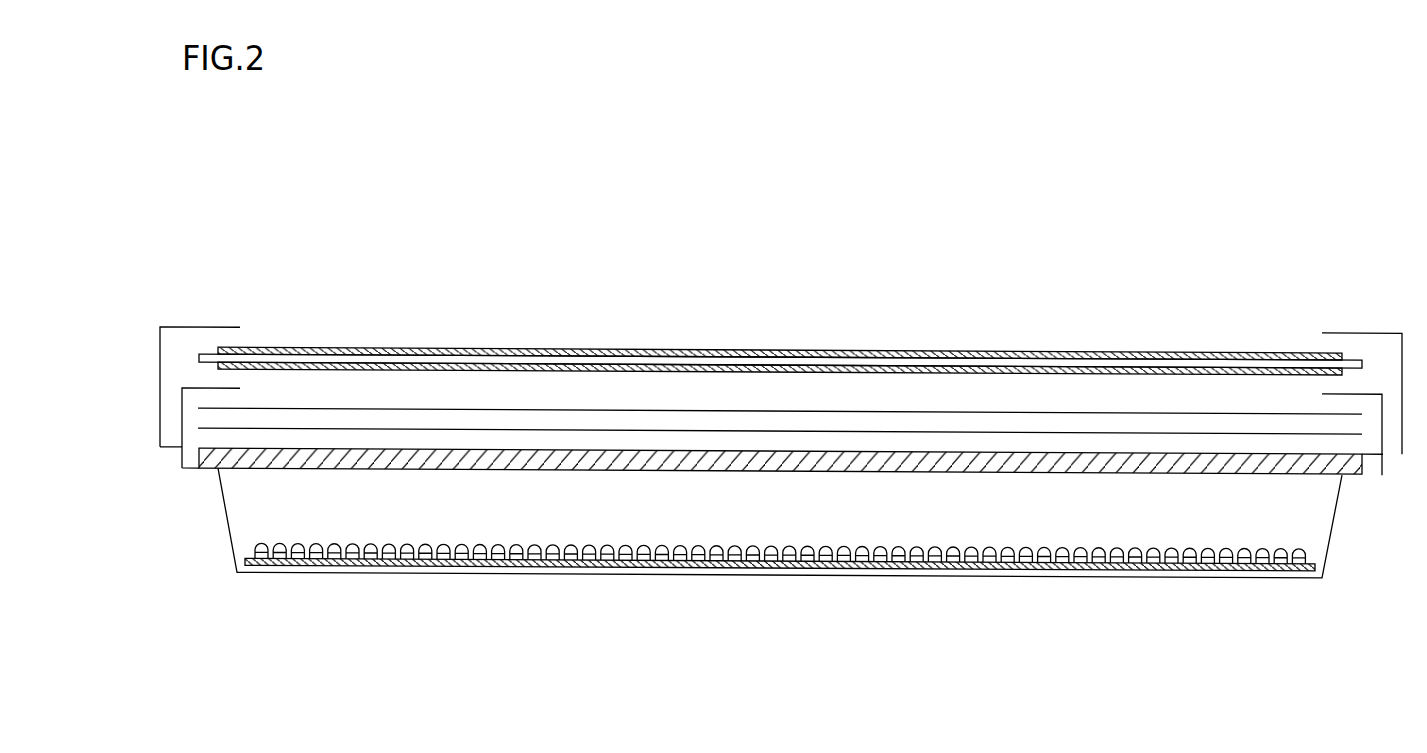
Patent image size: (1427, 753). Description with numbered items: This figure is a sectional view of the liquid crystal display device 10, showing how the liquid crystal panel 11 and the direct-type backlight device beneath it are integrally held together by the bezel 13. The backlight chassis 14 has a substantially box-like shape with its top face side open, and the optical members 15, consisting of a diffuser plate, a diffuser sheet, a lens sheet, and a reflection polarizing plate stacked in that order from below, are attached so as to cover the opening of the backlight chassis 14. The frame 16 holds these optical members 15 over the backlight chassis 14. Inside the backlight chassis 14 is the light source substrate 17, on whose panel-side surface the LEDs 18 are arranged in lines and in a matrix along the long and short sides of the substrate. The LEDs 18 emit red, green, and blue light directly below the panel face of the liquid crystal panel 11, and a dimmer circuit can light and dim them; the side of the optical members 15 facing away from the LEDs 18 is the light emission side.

The liquid crystal display device 10 is at (623, 266).
The liquid crystal panel 11 is at (492, 347).
The bezel 13 is at (208, 327).
The backlight chassis 14 is at (224, 510).
The optical members 15 is at (818, 430).
The frame 16 is at (190, 386).
The light source substrate 17 is at (1112, 561).
The LEDs 18 is at (480, 543).